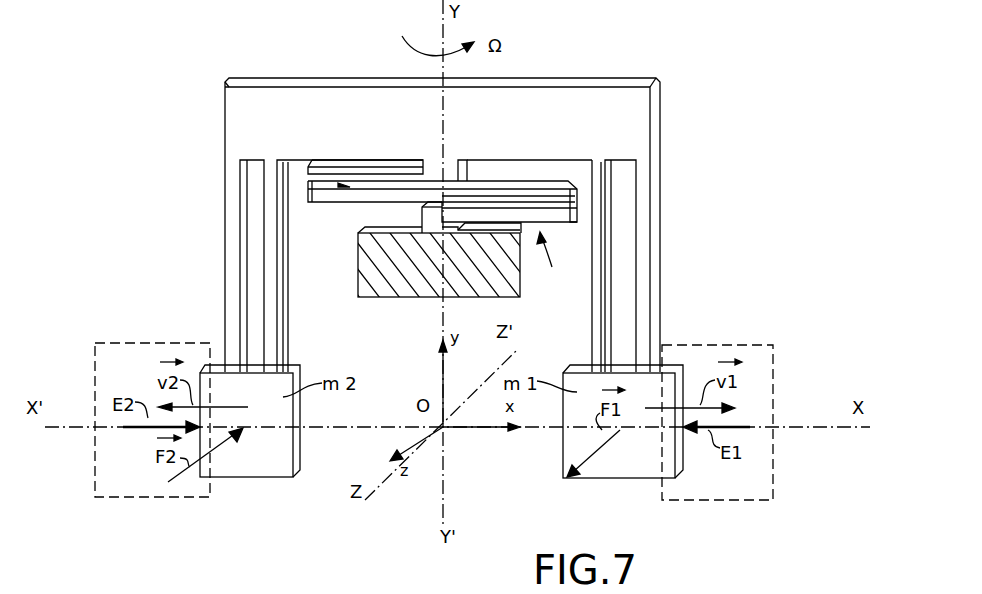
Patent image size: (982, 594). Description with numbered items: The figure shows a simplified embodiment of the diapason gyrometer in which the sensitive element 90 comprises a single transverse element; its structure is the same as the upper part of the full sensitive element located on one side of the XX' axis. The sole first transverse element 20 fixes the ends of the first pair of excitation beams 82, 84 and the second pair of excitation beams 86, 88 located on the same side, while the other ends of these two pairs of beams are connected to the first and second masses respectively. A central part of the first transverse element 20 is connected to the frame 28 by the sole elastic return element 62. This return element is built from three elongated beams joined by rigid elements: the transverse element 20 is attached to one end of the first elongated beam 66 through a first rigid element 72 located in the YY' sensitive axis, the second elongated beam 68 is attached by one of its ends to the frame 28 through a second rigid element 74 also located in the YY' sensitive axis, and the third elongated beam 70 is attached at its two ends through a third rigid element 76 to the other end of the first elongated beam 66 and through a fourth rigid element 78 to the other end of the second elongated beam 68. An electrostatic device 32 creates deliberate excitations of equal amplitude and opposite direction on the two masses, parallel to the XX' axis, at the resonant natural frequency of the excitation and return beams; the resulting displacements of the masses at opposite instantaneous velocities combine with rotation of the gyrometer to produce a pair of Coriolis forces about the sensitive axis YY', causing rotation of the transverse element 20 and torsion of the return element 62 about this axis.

The first transverse element 20 is at (307, 98).
The first frame 28 is at (400, 287).
The electrostatic device 32 is at (150, 343).
The elastic return element 62 is at (551, 266).
The first elongated beam 66 is at (380, 175).
The second elongated beam 68 is at (553, 212).
The third elongated beam 70 is at (350, 193).
The first rigid element 72 is at (448, 158).
The second rigid element 74 is at (432, 223).
The third rigid element 76 is at (323, 185).
The fourth rigid element 78 is at (557, 205).
The excitation beam 82 is at (591, 333).
The excitation beam 84 is at (637, 312).
The excitation beam 86 is at (279, 258).
The excitation beam 88 is at (238, 245).
The sensitive element 90 is at (620, 50).